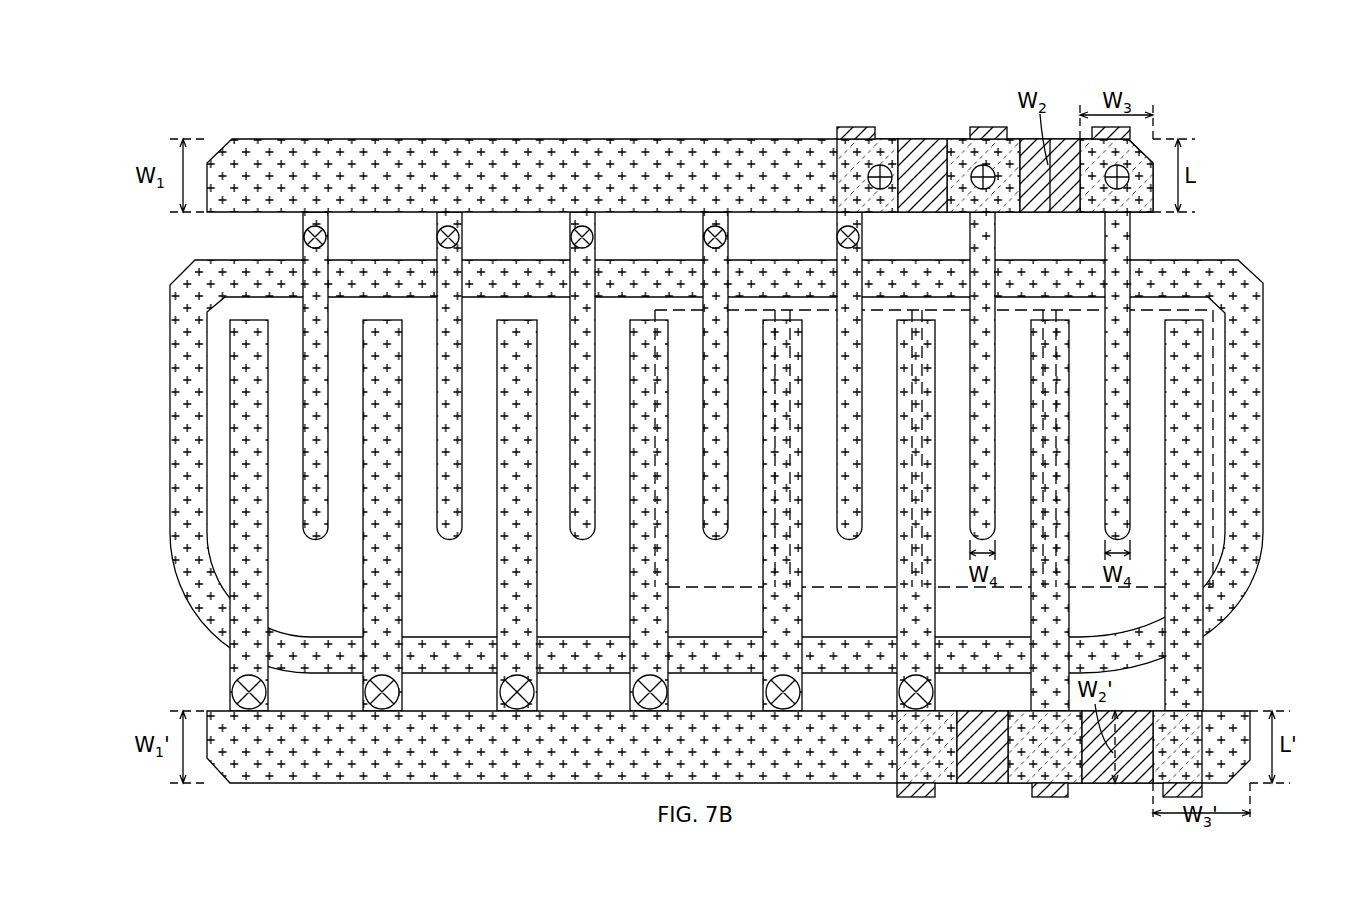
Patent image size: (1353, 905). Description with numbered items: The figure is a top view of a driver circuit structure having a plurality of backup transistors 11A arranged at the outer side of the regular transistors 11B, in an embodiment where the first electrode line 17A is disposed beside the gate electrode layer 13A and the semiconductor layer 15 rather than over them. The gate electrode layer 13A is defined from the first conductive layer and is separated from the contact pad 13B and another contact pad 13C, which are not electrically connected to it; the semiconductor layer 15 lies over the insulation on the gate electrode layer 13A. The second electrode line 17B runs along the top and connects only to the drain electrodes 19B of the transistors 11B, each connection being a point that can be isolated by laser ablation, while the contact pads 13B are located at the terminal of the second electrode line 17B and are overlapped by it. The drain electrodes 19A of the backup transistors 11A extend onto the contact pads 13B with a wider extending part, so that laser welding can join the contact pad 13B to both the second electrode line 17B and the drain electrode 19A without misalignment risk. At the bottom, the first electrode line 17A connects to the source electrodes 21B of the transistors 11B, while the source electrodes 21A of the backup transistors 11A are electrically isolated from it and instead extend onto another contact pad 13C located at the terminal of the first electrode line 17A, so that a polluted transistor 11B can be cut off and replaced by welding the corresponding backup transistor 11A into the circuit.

The backup transistor 11A is at (945, 590).
The transistor 11B is at (680, 590).
The gate electrode layer 13A is at (1263, 300).
The contact pad 13B is at (920, 139).
The another contact pad 13C is at (968, 783).
The semiconductor layer 15 is at (1225, 478).
The first electrode line 17A is at (1227, 711).
The second electrode line 17B is at (378, 139).
The drain electrode of the backup transistor 19A is at (1000, 310).
The drain electrode of the transistor 19B is at (727, 330).
The source electrode of the backup transistor 21A is at (1050, 320).
The source electrode of the transistor 21B is at (652, 320).